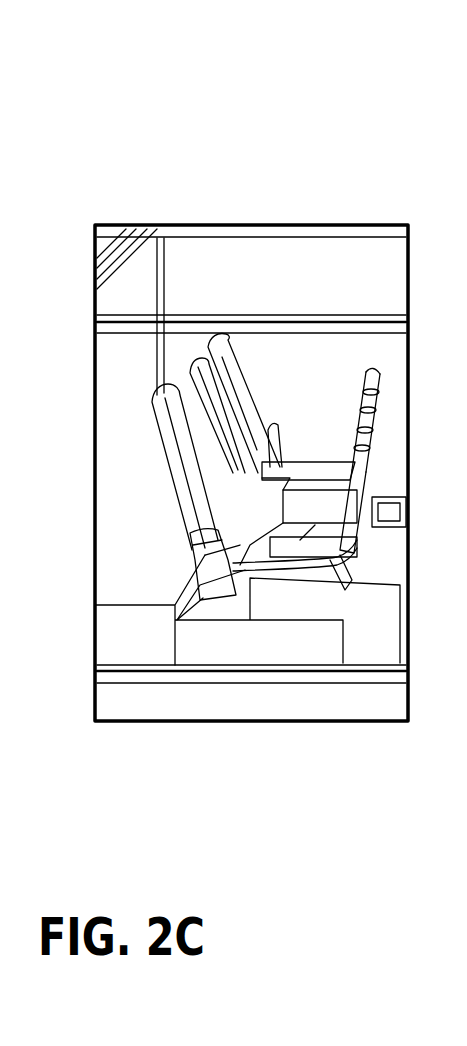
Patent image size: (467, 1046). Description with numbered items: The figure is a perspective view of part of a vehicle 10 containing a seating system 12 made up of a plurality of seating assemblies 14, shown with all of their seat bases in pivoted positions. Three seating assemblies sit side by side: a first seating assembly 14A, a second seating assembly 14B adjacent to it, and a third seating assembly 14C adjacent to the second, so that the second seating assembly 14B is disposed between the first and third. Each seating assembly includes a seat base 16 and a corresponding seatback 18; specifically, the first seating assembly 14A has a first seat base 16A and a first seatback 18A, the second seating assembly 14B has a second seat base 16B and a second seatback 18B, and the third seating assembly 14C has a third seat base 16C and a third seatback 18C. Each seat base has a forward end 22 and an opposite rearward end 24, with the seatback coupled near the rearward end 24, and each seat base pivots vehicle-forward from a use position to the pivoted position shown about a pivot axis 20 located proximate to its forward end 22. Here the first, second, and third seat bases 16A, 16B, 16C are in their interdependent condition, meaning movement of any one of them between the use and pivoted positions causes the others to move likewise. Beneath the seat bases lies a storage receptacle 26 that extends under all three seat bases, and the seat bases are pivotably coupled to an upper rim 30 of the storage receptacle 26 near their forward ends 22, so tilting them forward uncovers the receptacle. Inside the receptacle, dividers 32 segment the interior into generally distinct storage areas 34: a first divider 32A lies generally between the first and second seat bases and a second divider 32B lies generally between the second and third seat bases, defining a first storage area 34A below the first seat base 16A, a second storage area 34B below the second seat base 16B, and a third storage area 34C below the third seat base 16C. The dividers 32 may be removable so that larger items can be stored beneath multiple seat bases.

The vehicle 10 is at (302, 172).
The seating system 12 is at (93, 227).
The seating assemblies 14 is at (202, 377).
The first seating assembly 14A is at (158, 393).
The second seating assembly 14B is at (167, 367).
The third seating assembly 14C is at (227, 328).
The seat base 16 is at (395, 489).
The first seat base 16A is at (378, 558).
The second seat base 16B is at (344, 365).
The third seat base 16C is at (383, 365).
The seatback 18 is at (154, 326).
The first seatback 18A is at (185, 418).
The second seatback 18B is at (187, 357).
The third seatback 18C is at (250, 417).
The pivot axis 20 is at (378, 452).
The forward end 22 is at (337, 587).
The rearward end 24 is at (352, 364).
The storage receptacle 26 is at (307, 545).
The upper rim 30 is at (257, 545).
The dividers 32 is at (158, 602).
The first divider 32A is at (287, 605).
The second divider 32B is at (245, 505).
The storage areas 34 is at (201, 452).
The first storage area 34A is at (210, 555).
The second storage area 34B is at (270, 528).
The third storage area 34C is at (322, 487).